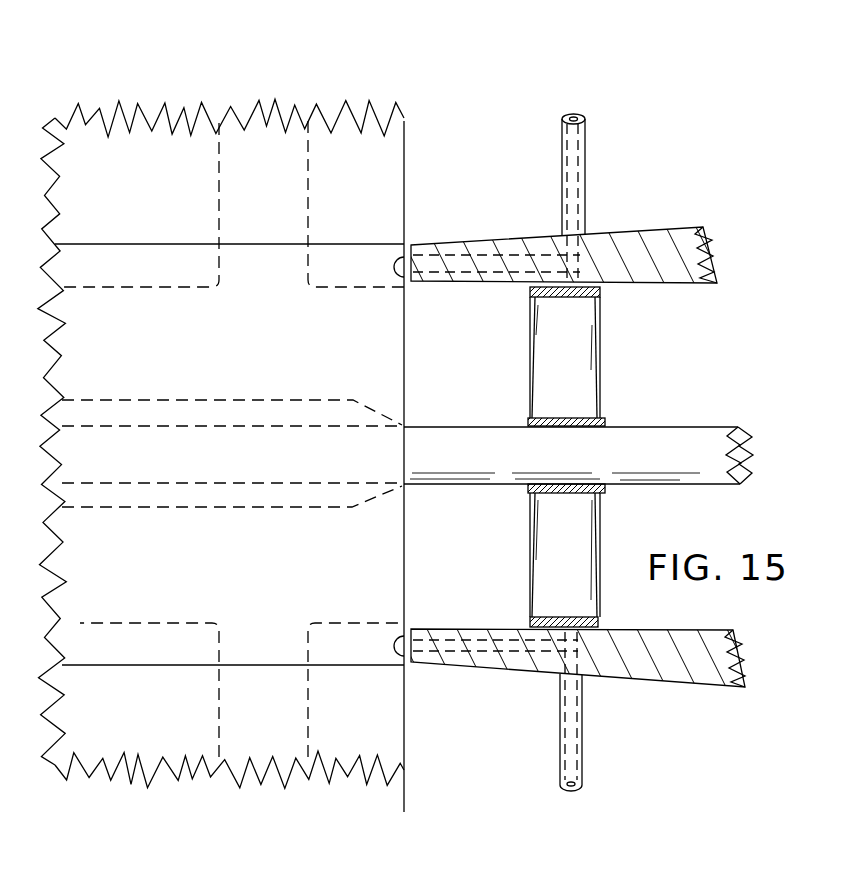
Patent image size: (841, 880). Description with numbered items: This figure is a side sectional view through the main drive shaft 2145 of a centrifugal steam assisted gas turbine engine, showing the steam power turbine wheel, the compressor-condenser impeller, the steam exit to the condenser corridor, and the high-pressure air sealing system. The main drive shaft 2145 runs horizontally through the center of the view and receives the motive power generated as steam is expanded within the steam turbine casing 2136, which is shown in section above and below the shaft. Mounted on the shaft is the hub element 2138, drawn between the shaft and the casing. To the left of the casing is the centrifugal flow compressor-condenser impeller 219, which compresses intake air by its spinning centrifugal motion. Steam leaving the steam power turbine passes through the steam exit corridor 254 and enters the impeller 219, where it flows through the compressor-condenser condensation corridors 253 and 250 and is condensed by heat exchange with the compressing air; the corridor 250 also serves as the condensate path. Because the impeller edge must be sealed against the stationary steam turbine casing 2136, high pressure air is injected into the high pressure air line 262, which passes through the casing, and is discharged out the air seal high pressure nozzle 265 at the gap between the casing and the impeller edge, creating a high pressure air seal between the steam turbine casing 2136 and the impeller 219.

The centrifugal flow compressor-condenser impeller 219 is at (165, 122).
The compressor-condenser condensation corridor 250 is at (262, 180).
The compressor-condenser condensation corridor 253 is at (233, 439).
The steam exit corridor 254 is at (468, 347).
The air seal high pressure nozzle 265 is at (460, 728).
The main drive shaft 2145 is at (740, 428).
The steam turbine casing 2136 is at (703, 228).
The high pressure air line 262 is at (587, 158).
The hub 2138 is at (603, 319).